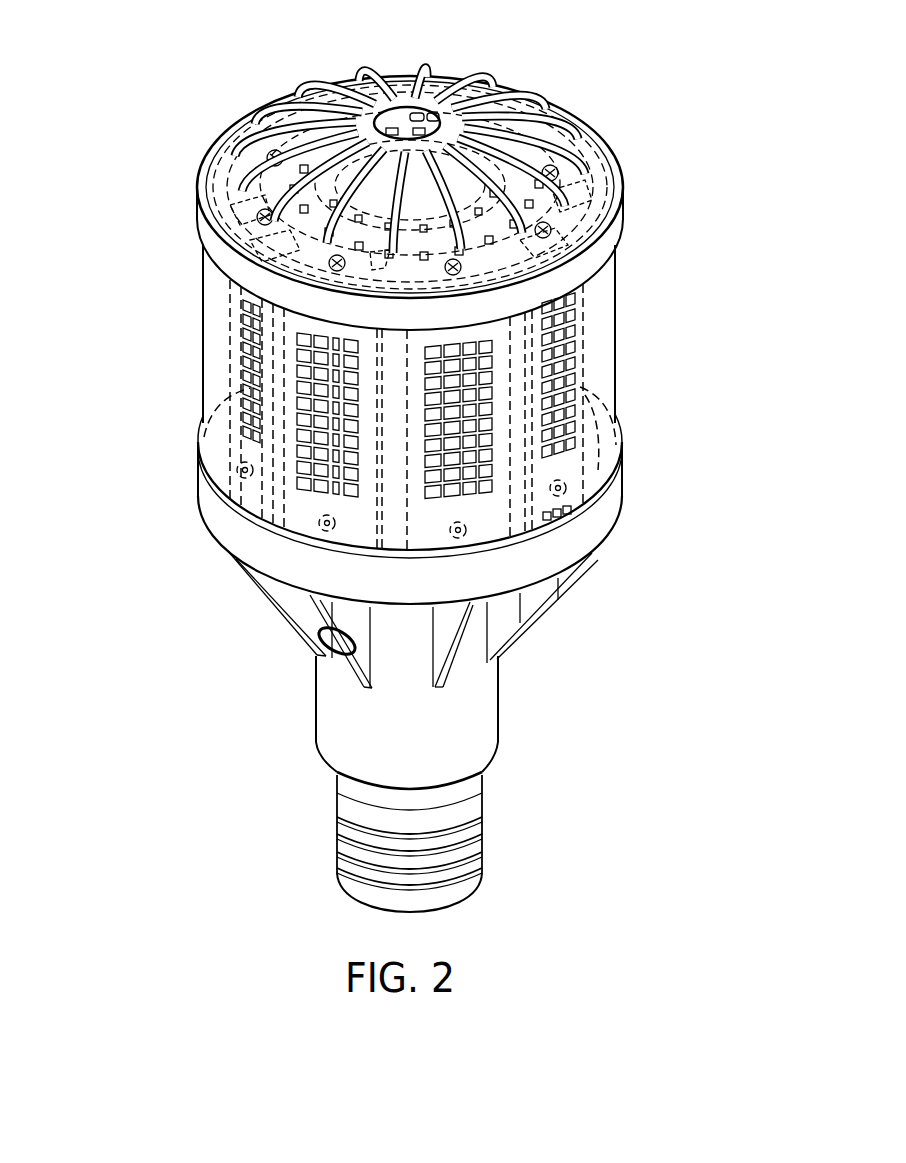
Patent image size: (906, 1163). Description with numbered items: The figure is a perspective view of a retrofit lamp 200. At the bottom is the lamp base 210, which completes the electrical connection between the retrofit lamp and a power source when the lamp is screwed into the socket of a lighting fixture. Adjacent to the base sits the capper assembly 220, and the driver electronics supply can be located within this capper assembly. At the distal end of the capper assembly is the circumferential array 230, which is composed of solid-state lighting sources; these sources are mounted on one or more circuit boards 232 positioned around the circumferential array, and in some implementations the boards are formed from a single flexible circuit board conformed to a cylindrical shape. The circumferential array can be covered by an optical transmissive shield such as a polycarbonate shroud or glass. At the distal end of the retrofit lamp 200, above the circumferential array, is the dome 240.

The retrofit lamp 200 is at (143, 66).
The dome 240 is at (513, 103).
The circumferential array 230 is at (695, 222).
The circuit boards 232 is at (437, 490).
The capper assembly 220 is at (502, 713).
The lamp base 210 is at (337, 795).